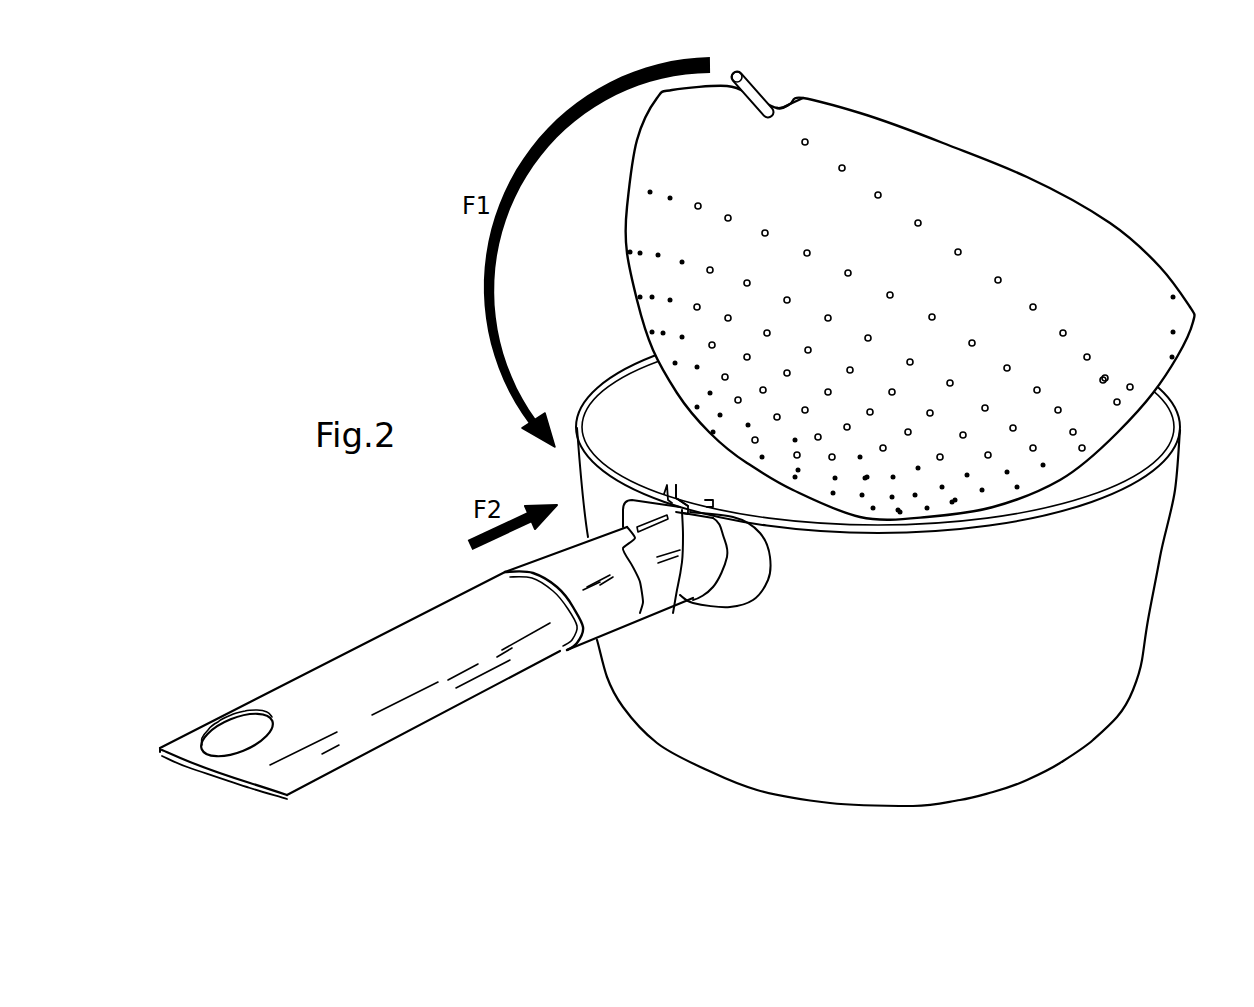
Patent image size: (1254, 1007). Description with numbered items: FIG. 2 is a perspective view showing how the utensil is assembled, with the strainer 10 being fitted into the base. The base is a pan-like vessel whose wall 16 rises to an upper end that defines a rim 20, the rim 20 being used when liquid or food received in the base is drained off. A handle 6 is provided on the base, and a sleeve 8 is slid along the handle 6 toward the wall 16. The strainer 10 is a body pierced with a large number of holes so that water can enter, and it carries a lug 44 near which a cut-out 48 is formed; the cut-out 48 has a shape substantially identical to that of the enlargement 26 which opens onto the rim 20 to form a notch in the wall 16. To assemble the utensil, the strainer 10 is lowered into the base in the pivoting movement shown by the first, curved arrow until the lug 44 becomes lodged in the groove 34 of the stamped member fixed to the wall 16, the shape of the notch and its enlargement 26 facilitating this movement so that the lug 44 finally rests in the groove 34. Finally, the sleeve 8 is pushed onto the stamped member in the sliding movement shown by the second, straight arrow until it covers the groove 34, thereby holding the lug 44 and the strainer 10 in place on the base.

The handle 6 is at (332, 675).
The sleeve 8 is at (617, 620).
The strainer 10 is at (946, 158).
The wall 16 is at (1140, 587).
The rim 20 is at (604, 374).
The enlargement 26 is at (677, 490).
The groove 34 is at (673, 613).
The lug 44 is at (746, 73).
The cut-out 48 is at (790, 103).